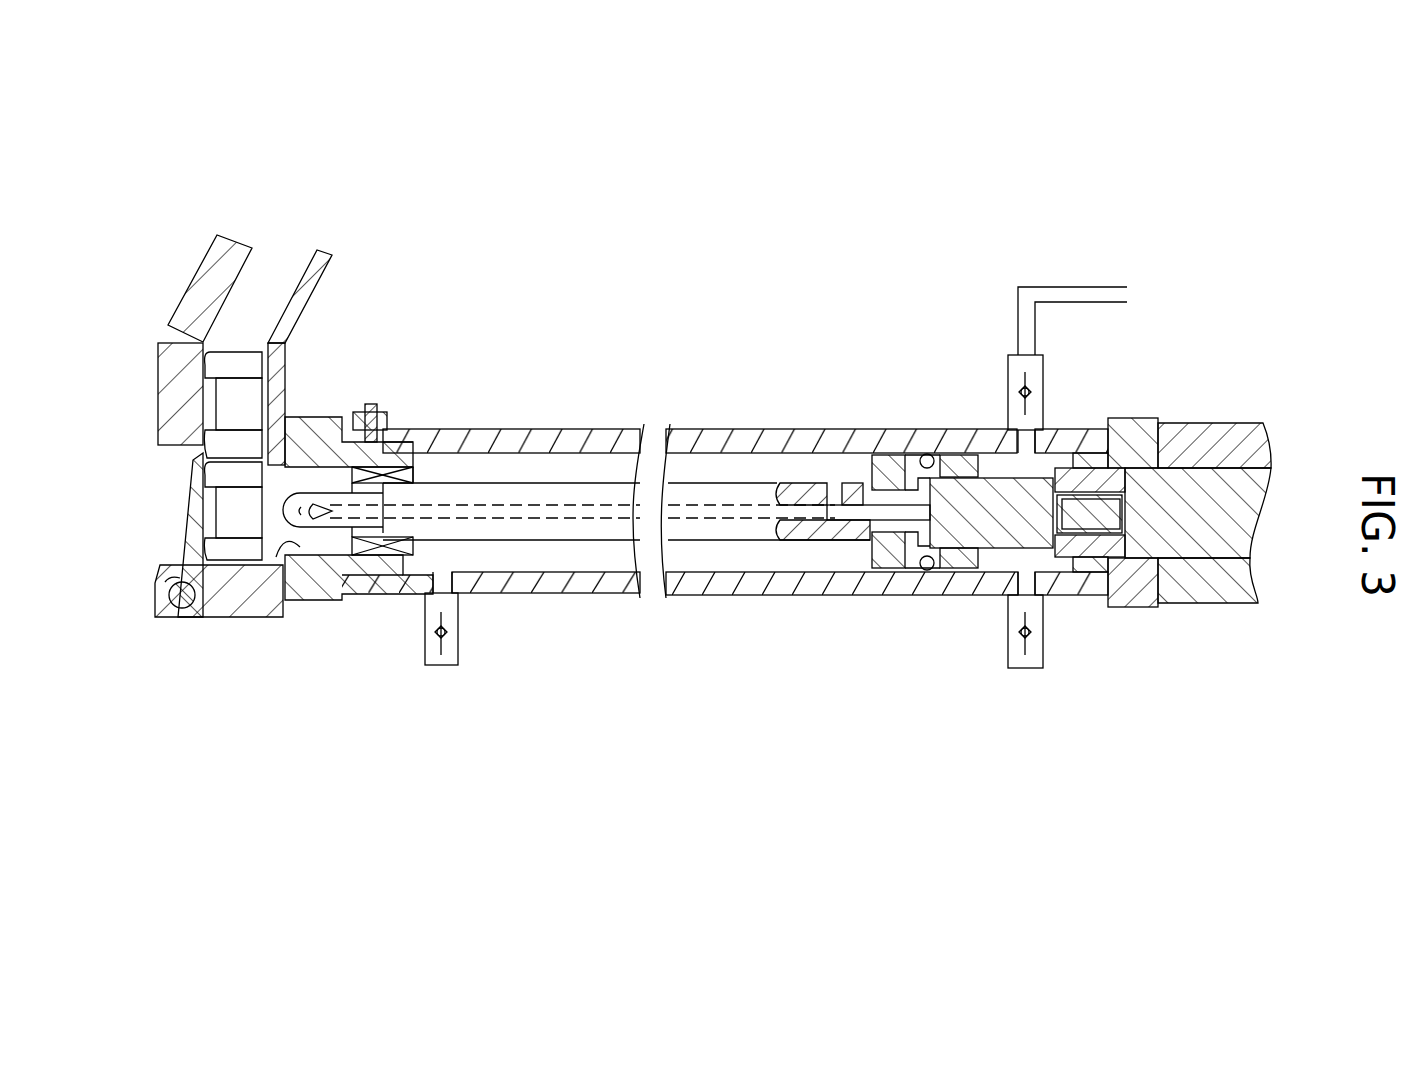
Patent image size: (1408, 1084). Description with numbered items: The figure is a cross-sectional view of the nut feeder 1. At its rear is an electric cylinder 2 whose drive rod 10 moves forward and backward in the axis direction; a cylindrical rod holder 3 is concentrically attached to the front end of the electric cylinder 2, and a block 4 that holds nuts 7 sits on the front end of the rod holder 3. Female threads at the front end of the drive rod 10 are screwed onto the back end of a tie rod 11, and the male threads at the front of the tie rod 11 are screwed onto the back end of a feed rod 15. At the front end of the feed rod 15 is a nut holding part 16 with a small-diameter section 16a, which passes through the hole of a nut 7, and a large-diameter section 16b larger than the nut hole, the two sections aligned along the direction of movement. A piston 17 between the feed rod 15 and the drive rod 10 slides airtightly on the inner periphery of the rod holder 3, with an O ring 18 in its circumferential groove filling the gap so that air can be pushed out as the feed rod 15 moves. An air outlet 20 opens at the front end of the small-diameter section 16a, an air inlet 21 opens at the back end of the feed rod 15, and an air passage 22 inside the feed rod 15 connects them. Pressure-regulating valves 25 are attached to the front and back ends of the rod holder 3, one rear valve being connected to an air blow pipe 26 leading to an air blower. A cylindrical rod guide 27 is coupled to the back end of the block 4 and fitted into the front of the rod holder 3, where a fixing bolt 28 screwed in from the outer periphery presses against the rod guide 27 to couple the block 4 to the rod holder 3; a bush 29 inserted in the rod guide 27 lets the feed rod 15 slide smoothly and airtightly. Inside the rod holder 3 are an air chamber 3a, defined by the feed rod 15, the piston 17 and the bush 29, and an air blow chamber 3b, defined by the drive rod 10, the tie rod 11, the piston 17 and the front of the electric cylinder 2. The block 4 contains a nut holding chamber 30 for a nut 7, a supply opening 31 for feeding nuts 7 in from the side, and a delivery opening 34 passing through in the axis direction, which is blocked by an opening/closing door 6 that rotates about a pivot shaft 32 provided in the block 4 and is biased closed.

The nut feeder 1 is at (713, 232).
The electric cylinder 2 is at (1200, 422).
The rod holder 3 is at (722, 428).
The air chamber 3a is at (550, 465).
The air blow chamber 3b is at (1000, 455).
The block 4 is at (256, 628).
The opening/closing door 6 is at (183, 530).
The nut 7 is at (218, 361).
The drive rod 10 is at (1200, 560).
The tie rod 11 is at (1000, 546).
The feed rod 15 is at (716, 543).
The nut holding part 16 is at (341, 484).
The small-diameter section 16a is at (363, 523).
The large-diameter section 16b is at (392, 488).
The piston 17 is at (897, 460).
The O ring 18 is at (920, 568).
The air outlet 20 is at (322, 515).
The air inlet 21 is at (835, 490).
The air passage 22 is at (797, 521).
The pressure-regulating valve 25 is at (1045, 367).
The air blow pipe 26 is at (1060, 287).
The rod guide 27 is at (368, 570).
The fixing bolt 28 is at (375, 405).
The bush 29 is at (410, 533).
The nut holding chamber 30 is at (300, 548).
The supply opening 31 is at (262, 342).
The pivot shaft 32 is at (190, 608).
The delivery opening 34 is at (173, 458).